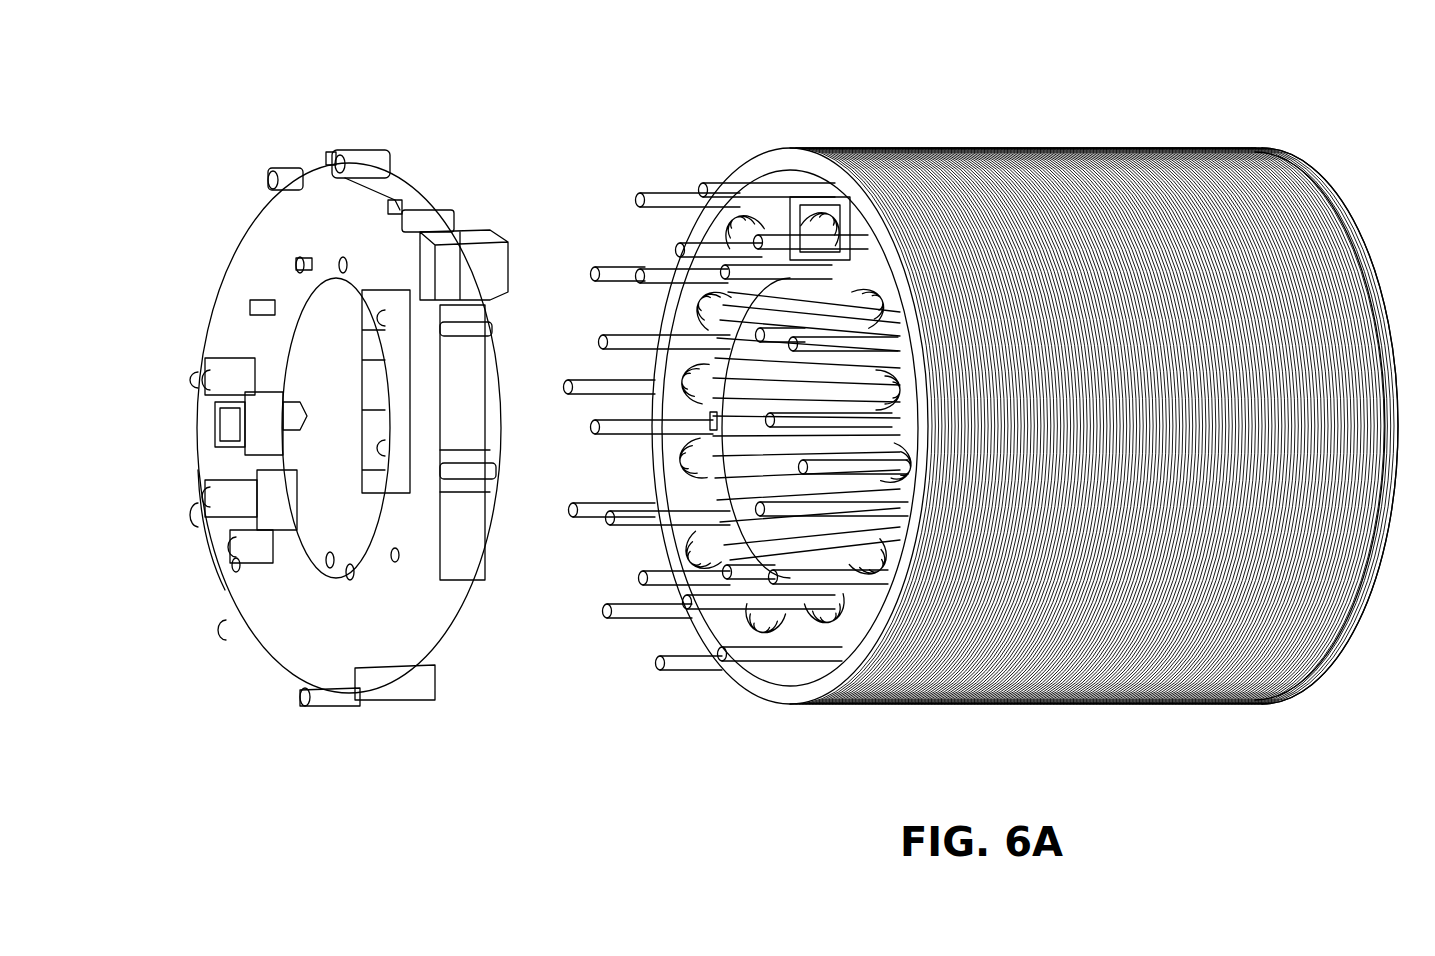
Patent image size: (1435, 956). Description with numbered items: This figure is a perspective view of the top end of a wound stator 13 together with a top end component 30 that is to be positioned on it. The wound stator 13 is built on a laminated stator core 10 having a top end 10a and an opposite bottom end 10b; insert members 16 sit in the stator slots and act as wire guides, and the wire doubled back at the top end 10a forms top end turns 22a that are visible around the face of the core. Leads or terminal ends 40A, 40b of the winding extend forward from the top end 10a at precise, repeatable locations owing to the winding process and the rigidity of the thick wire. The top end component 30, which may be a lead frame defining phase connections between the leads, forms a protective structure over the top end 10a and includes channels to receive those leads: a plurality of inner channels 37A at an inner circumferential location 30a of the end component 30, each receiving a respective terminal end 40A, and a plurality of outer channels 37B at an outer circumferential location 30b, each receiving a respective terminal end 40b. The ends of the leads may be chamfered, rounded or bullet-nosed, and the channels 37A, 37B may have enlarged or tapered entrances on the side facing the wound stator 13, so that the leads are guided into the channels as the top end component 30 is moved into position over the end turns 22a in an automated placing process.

The stator core 10 is at (965, 401).
The top end 10a is at (780, 693).
The bottom end 10b is at (1310, 683).
The wound stator 13 is at (835, 147).
The insert member 16 is at (890, 312).
The top end turn 22a is at (668, 466).
The top end component 30 is at (278, 668).
The inner circumferential location 30a is at (262, 428).
The outer circumferential location 30b is at (220, 585).
The inner channel 37A is at (300, 265).
The outer channel 37B is at (395, 205).
The terminal end 40A is at (617, 393).
The second terminal end 40b is at (612, 277).